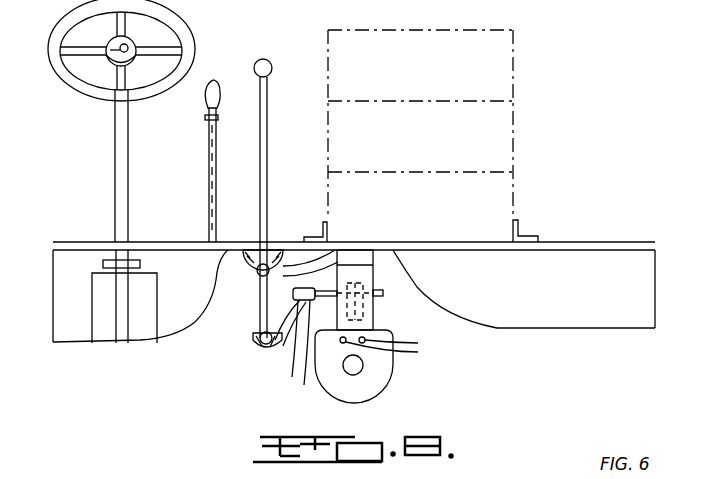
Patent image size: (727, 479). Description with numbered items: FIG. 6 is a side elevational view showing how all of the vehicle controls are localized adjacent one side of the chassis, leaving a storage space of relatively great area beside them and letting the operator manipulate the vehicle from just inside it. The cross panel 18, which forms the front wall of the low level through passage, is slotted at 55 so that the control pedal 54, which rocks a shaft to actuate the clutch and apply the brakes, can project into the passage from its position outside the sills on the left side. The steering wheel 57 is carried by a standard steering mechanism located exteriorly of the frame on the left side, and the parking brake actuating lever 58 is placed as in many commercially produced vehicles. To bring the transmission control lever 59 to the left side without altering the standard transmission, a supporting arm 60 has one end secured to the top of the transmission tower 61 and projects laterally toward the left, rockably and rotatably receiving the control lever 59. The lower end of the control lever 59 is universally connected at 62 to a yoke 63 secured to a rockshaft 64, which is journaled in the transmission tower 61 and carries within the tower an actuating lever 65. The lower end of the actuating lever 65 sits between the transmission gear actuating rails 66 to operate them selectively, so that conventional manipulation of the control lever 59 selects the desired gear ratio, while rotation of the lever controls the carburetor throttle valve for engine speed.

The cross panel 18 is at (562, 265).
The control pedal 54 is at (122, 317).
The slot 55 is at (165, 292).
The steering wheel 57 is at (187, 40).
The parking brake actuating lever 58 is at (212, 148).
The transmission control lever 59 is at (263, 118).
The supporting arm 60 is at (328, 255).
The transmission tower 61 is at (385, 270).
The universal connection 62 is at (256, 347).
The yoke 63 is at (292, 366).
The rockshaft 64 is at (309, 382).
The actuating lever 65 is at (373, 318).
The transmission gear actuating rails 66 is at (418, 352).